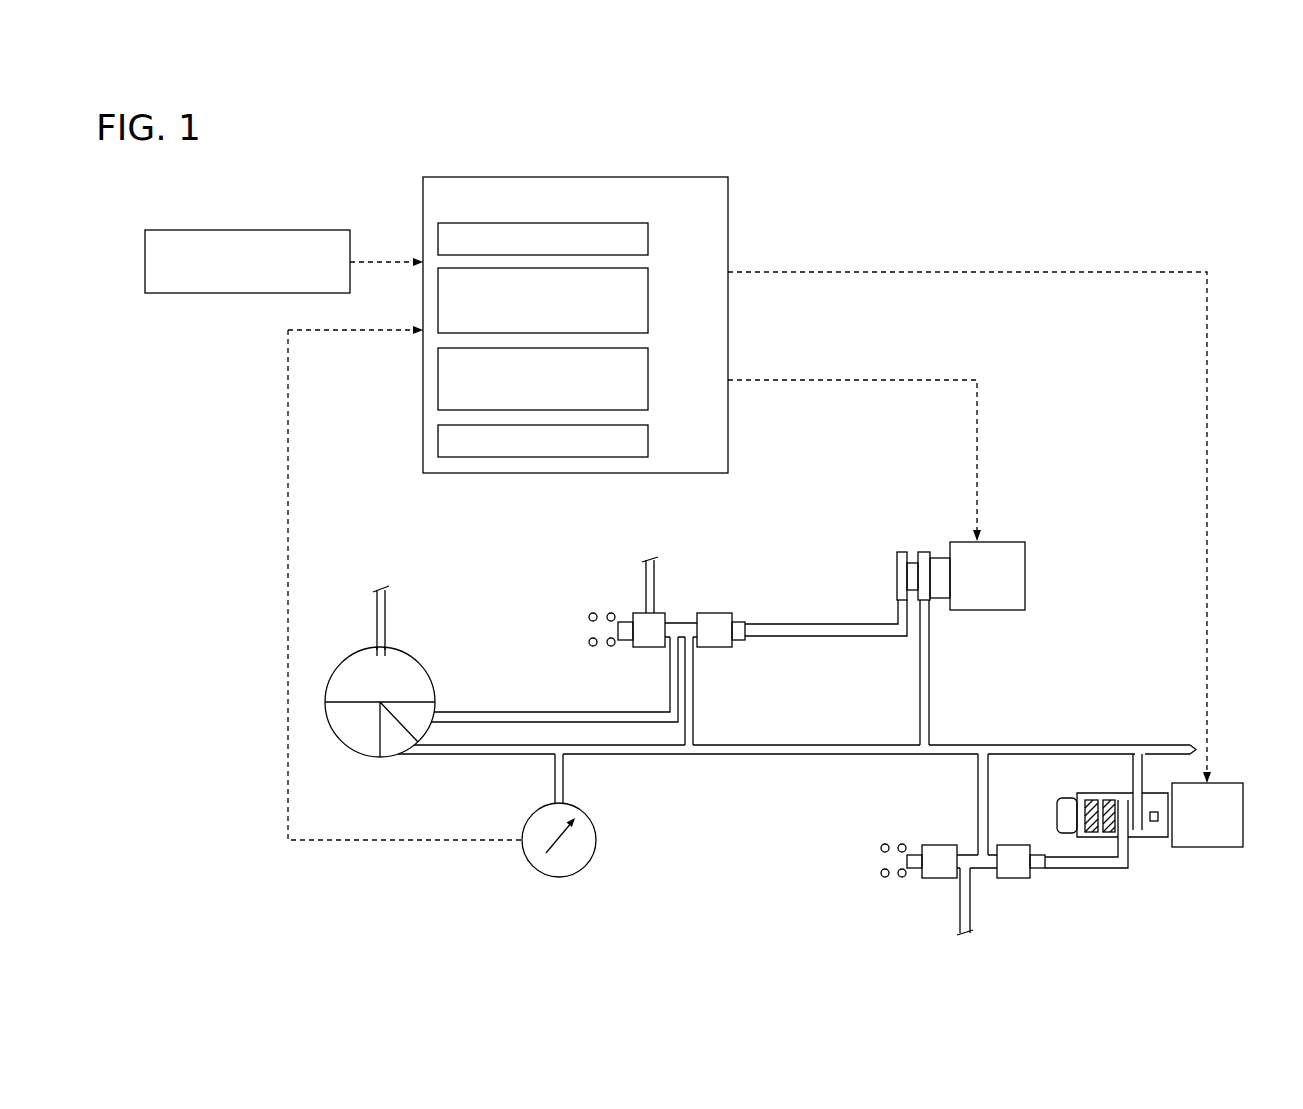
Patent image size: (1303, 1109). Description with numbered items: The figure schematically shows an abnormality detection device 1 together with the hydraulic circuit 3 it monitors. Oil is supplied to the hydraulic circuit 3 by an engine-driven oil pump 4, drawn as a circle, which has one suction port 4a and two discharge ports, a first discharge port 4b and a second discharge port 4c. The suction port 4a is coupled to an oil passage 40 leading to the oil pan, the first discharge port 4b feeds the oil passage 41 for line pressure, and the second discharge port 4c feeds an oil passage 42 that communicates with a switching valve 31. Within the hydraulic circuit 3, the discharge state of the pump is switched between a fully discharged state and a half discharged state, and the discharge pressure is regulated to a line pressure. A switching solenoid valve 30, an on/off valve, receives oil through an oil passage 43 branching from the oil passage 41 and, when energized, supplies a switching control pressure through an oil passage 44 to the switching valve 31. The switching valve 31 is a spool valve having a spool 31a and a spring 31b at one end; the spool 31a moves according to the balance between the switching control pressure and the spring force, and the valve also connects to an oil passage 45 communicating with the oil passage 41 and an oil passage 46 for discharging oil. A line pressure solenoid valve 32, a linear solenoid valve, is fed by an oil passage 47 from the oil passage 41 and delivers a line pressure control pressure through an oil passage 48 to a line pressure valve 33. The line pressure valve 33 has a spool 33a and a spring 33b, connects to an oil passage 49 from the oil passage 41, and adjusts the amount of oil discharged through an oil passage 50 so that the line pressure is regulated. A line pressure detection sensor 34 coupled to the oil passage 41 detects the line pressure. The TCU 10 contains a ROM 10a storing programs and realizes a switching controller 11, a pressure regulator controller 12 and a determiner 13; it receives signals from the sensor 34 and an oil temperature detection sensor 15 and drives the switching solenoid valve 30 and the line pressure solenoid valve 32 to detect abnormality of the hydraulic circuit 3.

The abnormality detection device 1 is at (818, 176).
The hydraulic circuit 3 is at (1112, 392).
The oil pump 4 is at (345, 652).
The suction port 4a is at (402, 656).
The first discharge port 4b is at (381, 760).
The second discharge port 4c is at (437, 702).
The TCU 10 is at (729, 191).
The ROM 10a is at (649, 233).
The switching controller 11 is at (649, 290).
The pressure regulator controller 12 is at (649, 371).
The determiner 13 is at (649, 436).
The oil temperature detection sensor 15 is at (293, 229).
The switching solenoid valve 30 is at (1011, 540).
The switching valve 31 is at (713, 612).
The spool 31a is at (650, 649).
The spring 31b is at (601, 649).
The line pressure solenoid valve 32 is at (1205, 849).
The line pressure valve 33 is at (1015, 843).
The spool 33a is at (926, 843).
The spring 33b is at (902, 880).
The line pressure detection sensor 34 is at (591, 858).
The oil passage 40 is at (388, 612).
The oil passage 41 is at (480, 758).
The oil passage 42 is at (549, 710).
The oil passage 43 is at (931, 669).
The oil passage 44 is at (795, 622).
The oil passage 45 is at (696, 709).
The oil passage 46 is at (645, 575).
The oil passage 47 is at (1132, 772).
The oil passage 48 is at (1095, 870).
The oil passage 49 is at (976, 782).
The oil passage 50 is at (972, 904).